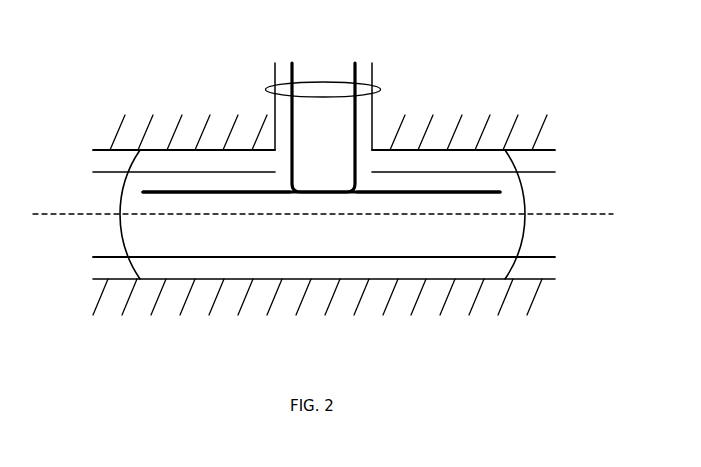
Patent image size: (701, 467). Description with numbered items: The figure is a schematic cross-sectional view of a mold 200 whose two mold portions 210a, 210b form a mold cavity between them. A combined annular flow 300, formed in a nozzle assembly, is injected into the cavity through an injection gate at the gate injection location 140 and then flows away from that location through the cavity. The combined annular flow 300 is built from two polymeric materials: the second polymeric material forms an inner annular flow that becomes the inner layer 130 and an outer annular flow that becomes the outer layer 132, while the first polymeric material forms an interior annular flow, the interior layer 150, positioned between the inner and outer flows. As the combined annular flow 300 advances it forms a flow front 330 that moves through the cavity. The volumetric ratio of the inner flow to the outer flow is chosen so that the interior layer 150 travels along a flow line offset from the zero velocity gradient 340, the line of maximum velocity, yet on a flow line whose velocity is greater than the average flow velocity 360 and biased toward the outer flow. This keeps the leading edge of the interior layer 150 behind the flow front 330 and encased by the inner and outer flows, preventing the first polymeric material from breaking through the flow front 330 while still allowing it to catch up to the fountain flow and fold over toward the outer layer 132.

The mold 200 is at (443, 60).
The inner layer 130 is at (328, 132).
The outer layer 132 is at (283, 113).
The gate injection location 140 is at (338, 68).
The interior layer 150 is at (203, 193).
The mold portion 210a is at (472, 131).
The mold portion 210b is at (472, 295).
The combined annular flow 300 is at (267, 88).
The flow front 330 is at (125, 250).
The zero velocity gradient 340 is at (596, 213).
The average flow velocity 360 is at (101, 172).